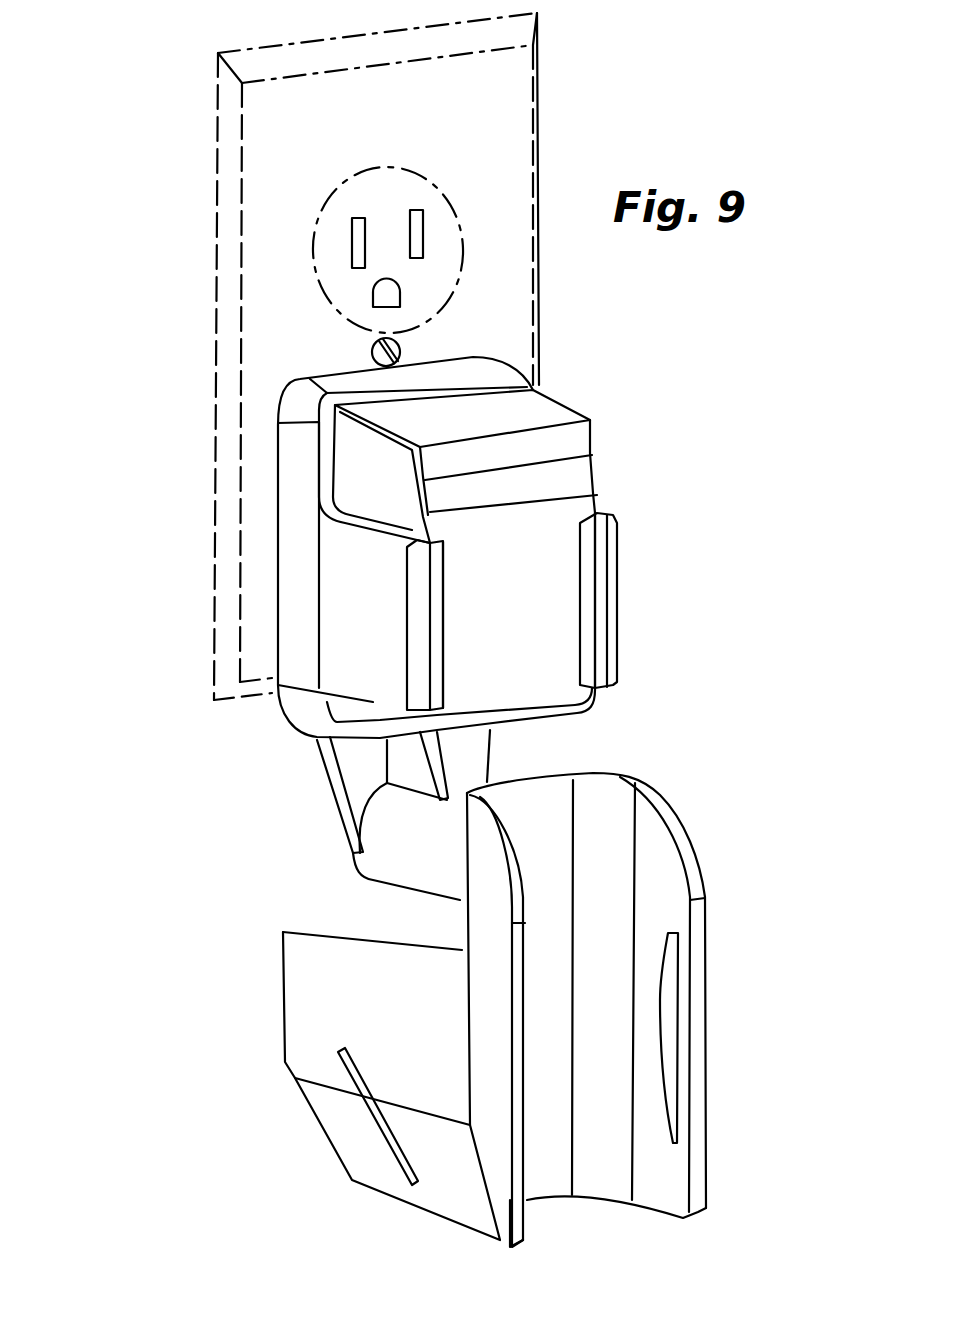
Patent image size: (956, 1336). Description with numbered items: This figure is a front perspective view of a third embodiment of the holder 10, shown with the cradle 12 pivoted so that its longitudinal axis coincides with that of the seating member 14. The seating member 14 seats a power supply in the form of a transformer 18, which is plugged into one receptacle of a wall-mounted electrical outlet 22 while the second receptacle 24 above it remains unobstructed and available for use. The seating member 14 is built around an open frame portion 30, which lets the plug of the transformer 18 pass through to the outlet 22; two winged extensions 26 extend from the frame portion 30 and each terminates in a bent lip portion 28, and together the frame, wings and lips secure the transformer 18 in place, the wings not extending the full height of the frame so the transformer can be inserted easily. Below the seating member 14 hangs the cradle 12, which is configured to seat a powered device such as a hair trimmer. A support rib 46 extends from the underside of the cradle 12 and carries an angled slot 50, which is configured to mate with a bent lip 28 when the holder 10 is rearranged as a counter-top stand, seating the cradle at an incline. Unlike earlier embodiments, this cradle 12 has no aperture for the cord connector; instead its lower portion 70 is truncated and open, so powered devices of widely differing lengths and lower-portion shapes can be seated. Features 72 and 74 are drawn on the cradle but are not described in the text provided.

The holder 10 is at (207, 817).
The cradle 12 is at (654, 1022).
The seating member 14 is at (539, 550).
The transformer 18 is at (528, 628).
The electrical outlet 22 is at (487, 100).
The second receptacle 24 is at (440, 288).
The winged extension 26 is at (337, 670).
The bent lip portion 28 is at (433, 590).
The frame portion 30 is at (297, 455).
The support rib 46 is at (353, 1086).
The slot 50 is at (370, 1123).
The lower portion of the cradle 70 is at (613, 1200).
The slot in bracket 72 is at (667, 1188).
The retaining lip of bracket 74 is at (520, 1168).